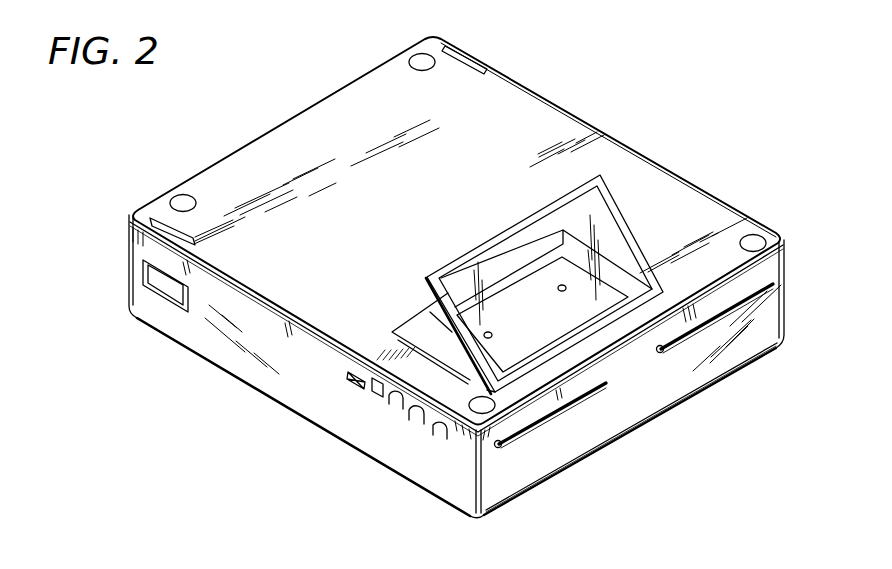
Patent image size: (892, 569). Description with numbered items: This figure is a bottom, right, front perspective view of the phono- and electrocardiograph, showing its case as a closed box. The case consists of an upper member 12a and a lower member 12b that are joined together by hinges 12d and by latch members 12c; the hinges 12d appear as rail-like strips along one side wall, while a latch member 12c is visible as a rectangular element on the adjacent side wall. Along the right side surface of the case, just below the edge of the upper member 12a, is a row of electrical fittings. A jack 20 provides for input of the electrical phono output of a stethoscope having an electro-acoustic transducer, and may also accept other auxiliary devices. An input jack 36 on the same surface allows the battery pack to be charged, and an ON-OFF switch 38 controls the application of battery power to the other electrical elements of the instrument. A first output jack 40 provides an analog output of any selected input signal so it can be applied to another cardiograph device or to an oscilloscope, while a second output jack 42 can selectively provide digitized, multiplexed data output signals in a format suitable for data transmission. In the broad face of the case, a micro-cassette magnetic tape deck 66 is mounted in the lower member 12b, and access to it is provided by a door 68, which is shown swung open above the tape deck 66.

The upper member 12a is at (543, 97).
The lower member 12b is at (541, 489).
The latch members 12c is at (169, 294).
The hinges 12d is at (604, 388).
The jack 20 is at (440, 436).
The input jack 36 is at (376, 396).
The ON-OFF switch 38 is at (352, 381).
The first output jack 40 is at (419, 422).
The second output jack 42 is at (394, 406).
The micro-cassette magnetic tape deck 66 is at (447, 333).
The door 68 is at (608, 190).